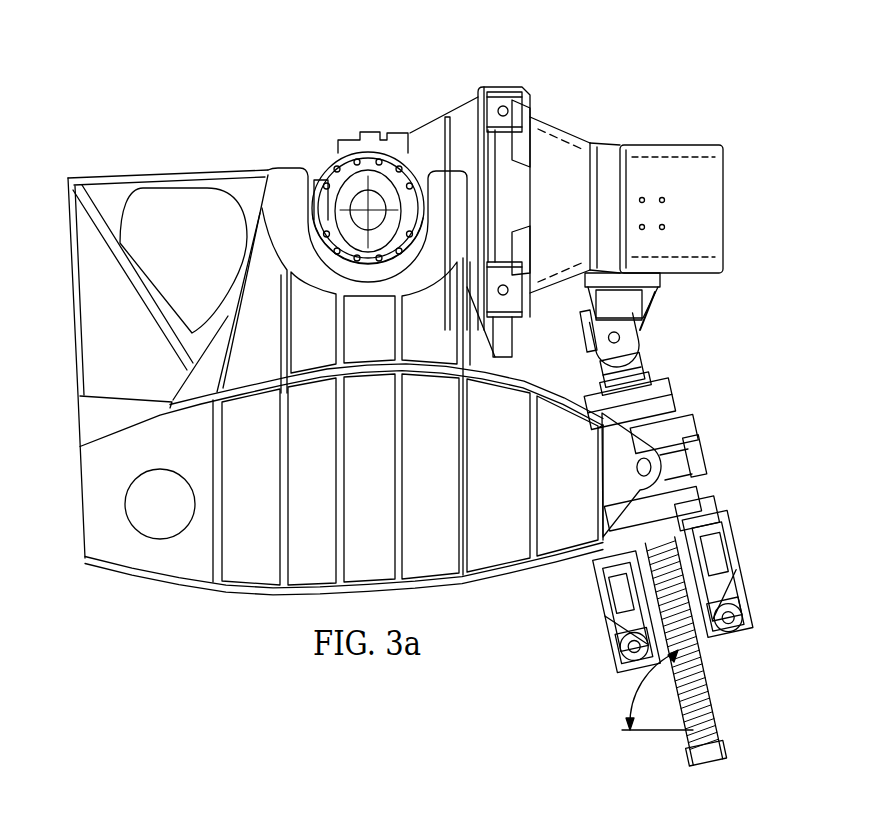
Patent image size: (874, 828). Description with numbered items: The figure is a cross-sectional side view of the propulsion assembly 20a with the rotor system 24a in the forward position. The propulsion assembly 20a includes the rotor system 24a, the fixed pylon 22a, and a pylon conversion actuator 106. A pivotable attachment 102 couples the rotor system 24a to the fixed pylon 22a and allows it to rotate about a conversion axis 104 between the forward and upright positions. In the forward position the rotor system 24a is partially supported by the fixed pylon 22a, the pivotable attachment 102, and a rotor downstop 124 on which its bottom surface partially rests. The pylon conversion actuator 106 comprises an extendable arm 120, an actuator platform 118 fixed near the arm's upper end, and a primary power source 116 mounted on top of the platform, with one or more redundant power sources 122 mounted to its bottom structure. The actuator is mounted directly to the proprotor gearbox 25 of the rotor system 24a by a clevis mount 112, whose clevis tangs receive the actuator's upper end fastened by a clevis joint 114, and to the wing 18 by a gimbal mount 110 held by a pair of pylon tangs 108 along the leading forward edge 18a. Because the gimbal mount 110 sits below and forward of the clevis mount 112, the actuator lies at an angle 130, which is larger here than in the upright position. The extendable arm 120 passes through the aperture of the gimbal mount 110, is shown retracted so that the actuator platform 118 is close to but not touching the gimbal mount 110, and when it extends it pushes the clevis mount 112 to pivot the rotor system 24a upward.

The propulsion assembly 20a is at (748, 78).
The fixed pylon 22a is at (272, 172).
The wing 18 is at (226, 586).
The leading forward edge 18a is at (600, 511).
The pivotable attachment 102 is at (404, 134).
The conversion axis 104 is at (330, 176).
The rotor downstop 124 is at (514, 353).
The proprotor gearbox 25 is at (601, 142).
The rotor system 24a is at (676, 135).
The pylon conversion actuator 106 is at (812, 498).
The clevis mount 112 is at (640, 318).
The clevis joint 114 is at (610, 342).
The primary power source 116 is at (643, 360).
The actuator platform 118 is at (680, 416).
The pylon tangs 108 is at (680, 452).
The gimbal mount 110 is at (706, 467).
The extendable arm 120 is at (718, 688).
The redundant power source 122 is at (762, 590).
The angle 130 is at (638, 692).